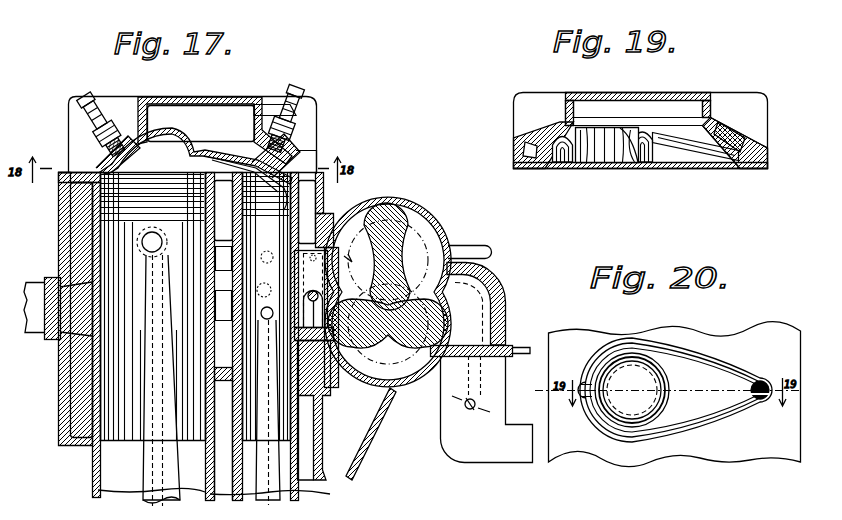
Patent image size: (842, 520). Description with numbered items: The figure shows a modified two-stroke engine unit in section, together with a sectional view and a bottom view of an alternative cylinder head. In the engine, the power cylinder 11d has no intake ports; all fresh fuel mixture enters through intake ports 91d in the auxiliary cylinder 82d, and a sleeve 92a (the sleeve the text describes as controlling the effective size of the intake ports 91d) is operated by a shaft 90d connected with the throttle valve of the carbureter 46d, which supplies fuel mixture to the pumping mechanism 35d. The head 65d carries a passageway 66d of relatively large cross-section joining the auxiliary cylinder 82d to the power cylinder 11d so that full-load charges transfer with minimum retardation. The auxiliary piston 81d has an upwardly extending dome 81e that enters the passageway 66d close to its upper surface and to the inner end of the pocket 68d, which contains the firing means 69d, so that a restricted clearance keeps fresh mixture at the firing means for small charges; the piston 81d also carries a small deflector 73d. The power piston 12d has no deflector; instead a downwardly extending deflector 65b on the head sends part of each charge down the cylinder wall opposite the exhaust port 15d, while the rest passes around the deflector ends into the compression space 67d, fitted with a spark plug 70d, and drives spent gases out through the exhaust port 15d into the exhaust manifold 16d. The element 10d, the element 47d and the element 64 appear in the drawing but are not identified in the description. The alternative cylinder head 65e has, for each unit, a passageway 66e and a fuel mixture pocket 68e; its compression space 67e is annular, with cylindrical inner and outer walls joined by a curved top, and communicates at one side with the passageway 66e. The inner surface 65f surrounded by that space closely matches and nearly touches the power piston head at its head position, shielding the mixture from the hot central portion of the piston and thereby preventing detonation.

In FIG. 17, the cylinder block 10d is at (60, 408).
In FIG. 17, the power cylinder 11d is at (96, 474).
In FIG. 17, the power piston 12d is at (96, 258).
In FIG. 17, the exhaust port 15d is at (56, 345).
In FIG. 17, the exhaust manifold 16d is at (52, 340).
In FIG. 17, the pumping mechanism 35d is at (412, 222).
In FIG. 17, the carbureter 46d is at (455, 476).
In FIG. 17, the valve 47d is at (448, 408).
In FIG. 17, the pipe 64 is at (470, 250).
In FIG. 17, the deflector 65b is at (172, 140).
In FIG. 17, the head 65d is at (212, 87).
In FIG. 19, the cylinder head 65e is at (665, 93).
In FIG. 20, the cylinder head 65e is at (752, 330).
In FIG. 19, the inner surface 65f is at (605, 168).
In FIG. 20, the inner surface 65f is at (632, 390).
In FIG. 17, the passageway 66d is at (219, 152).
In FIG. 19, the passageway 66e is at (690, 165).
In FIG. 20, the passageway 66e is at (708, 368).
In FIG. 17, the compression space 67d is at (136, 136).
In FIG. 19, the compression space 67e is at (648, 185).
In FIG. 20, the compression space 67e is at (632, 442).
In FIG. 17, the pocket 68d is at (260, 100).
In FIG. 19, the fuel mixture pocket 68e is at (767, 138).
In FIG. 20, the fuel mixture pocket 68e is at (758, 400).
In FIG. 17, the firing means 69d is at (300, 124).
In FIG. 17, the spark plug 70d is at (96, 136).
In FIG. 17, the deflector 73d is at (322, 166).
In FIG. 17, the auxiliary piston 81d is at (312, 206).
In FIG. 17, the dome 81e is at (314, 148).
In FIG. 17, the auxiliary cylinder 82d is at (300, 420).
In FIG. 17, the shaft 90d is at (318, 396).
In FIG. 17, the intake ports 91d is at (238, 322).
In FIG. 17, the valve element 92a is at (238, 280).